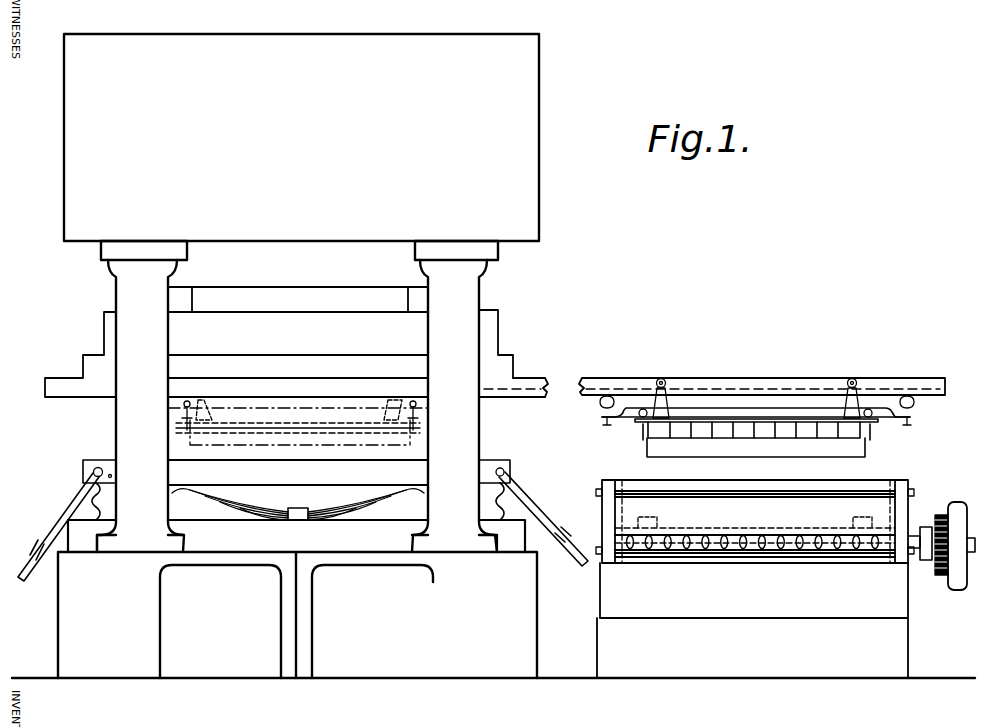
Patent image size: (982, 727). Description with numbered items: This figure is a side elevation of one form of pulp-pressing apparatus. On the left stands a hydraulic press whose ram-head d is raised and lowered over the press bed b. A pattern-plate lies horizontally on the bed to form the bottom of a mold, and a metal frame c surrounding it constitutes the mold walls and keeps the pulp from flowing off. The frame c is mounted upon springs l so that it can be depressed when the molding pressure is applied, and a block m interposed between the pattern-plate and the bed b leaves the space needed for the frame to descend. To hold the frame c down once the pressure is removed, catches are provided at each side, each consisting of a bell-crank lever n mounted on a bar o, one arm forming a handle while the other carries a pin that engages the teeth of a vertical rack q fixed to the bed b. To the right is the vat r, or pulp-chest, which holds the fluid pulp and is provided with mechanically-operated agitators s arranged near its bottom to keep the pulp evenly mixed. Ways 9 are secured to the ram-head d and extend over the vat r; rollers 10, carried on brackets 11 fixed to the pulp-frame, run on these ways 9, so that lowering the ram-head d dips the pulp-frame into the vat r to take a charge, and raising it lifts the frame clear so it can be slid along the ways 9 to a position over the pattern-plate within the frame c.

The press ram-head d is at (295, 342).
The metal frame c is at (298, 474).
The bed b is at (298, 536).
The springs l is at (270, 512).
The block m is at (308, 502).
The bar o is at (97, 467).
The bell-crank lever n is at (68, 504).
The vertical rack q is at (94, 522).
The ways 9 is at (582, 380).
The rollers 10 is at (665, 378).
The brackets 11 is at (666, 406).
The vat r is at (785, 579).
The agitators s is at (762, 548).